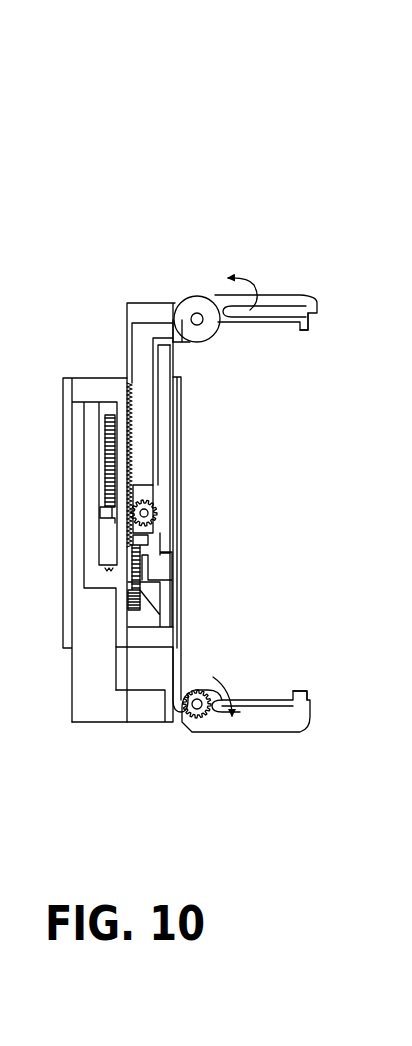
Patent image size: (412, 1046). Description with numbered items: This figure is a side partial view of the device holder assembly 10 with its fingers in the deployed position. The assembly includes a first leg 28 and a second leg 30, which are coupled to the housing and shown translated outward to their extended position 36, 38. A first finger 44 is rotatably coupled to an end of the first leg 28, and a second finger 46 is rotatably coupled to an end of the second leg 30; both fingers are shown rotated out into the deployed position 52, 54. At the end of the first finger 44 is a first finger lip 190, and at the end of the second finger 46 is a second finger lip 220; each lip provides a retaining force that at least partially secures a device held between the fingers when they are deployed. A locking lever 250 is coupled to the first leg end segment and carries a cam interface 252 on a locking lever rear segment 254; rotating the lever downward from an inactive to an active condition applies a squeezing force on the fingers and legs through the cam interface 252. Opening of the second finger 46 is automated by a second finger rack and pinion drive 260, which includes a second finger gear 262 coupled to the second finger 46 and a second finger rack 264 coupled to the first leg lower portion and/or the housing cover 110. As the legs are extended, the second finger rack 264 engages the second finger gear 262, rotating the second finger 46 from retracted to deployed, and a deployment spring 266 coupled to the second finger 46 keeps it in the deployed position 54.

The device holder assembly 10 is at (60, 213).
The first leg 28 is at (126, 312).
The second leg 30 is at (71, 705).
The extended position 36 is at (170, 370).
The extended position 38 is at (95, 723).
The first finger 44 is at (300, 296).
The second finger 46 is at (264, 727).
The deployed position 52 is at (282, 322).
The deployed position 54 is at (304, 728).
The housing cover 110 is at (183, 533).
The first finger lip 190 is at (313, 331).
The second finger lip 220 is at (311, 698).
The locking lever 250 is at (265, 294).
The cam interface 252 is at (171, 303).
The locking lever rear segment 254 is at (202, 295).
The second finger rack and pinion drive 260 is at (201, 620).
The second finger gear 262 is at (191, 717).
The second finger rack 264 is at (183, 655).
The deployment spring 266 is at (194, 678).